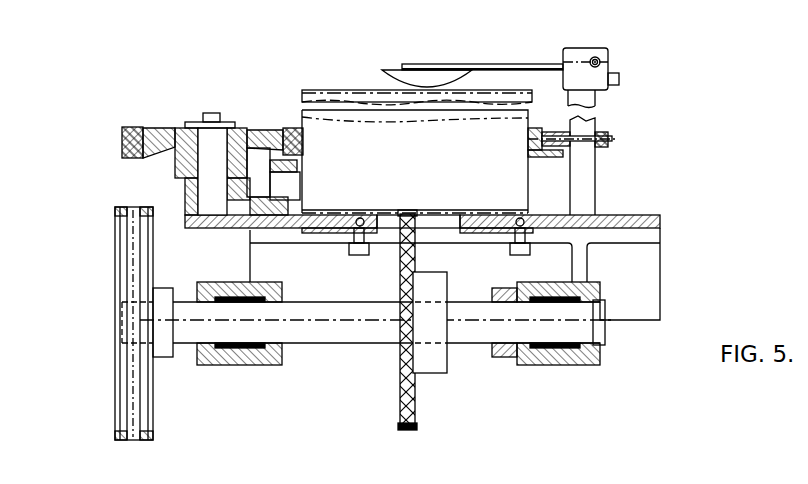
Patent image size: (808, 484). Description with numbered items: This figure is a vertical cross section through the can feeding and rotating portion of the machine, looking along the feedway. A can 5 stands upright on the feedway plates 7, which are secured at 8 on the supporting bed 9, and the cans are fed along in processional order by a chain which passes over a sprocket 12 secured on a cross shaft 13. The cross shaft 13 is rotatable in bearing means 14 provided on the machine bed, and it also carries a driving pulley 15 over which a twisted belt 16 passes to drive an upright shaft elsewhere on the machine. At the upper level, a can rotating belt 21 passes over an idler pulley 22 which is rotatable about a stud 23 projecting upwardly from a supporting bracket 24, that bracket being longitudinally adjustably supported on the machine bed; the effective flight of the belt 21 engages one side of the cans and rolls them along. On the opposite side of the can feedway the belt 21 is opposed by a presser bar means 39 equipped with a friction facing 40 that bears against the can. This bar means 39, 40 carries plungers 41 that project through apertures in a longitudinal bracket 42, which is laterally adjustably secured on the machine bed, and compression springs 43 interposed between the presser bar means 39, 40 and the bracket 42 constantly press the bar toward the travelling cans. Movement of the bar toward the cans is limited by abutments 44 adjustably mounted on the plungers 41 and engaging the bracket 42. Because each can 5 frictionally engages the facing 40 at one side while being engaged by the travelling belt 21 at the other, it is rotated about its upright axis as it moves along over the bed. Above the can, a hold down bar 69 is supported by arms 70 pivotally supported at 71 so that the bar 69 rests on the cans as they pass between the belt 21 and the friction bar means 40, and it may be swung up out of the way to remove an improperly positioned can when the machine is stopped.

The can 5 is at (305, 93).
The feedway plate 7 is at (475, 215).
The securing point 8 is at (358, 217).
The supporting bed 9 is at (202, 230).
The sprocket 12 is at (400, 393).
The cross shaft 13 is at (297, 333).
The bearing means 14 is at (213, 363).
The driving pulley 15 is at (117, 391).
The twisted belt 16 is at (133, 268).
The can rotating belt 21 is at (122, 143).
The idler pulley 22 is at (142, 124).
The stud 23 is at (207, 137).
The supporting bracket 24 is at (182, 188).
The presser bar means 39 is at (538, 157).
The friction facing 40 is at (532, 150).
The plunger 41 is at (565, 148).
The longitudinal bracket 42 is at (587, 188).
The compression spring 43 is at (562, 132).
The abutment 44 is at (608, 138).
The can hold down bar 69 is at (395, 73).
The arm 70 is at (423, 63).
The pivot support 71 is at (606, 42).